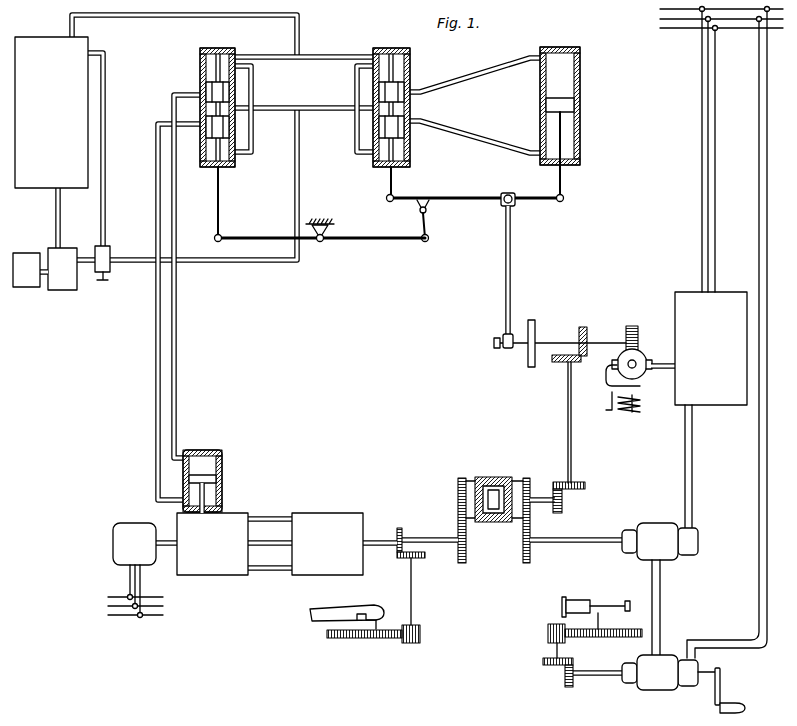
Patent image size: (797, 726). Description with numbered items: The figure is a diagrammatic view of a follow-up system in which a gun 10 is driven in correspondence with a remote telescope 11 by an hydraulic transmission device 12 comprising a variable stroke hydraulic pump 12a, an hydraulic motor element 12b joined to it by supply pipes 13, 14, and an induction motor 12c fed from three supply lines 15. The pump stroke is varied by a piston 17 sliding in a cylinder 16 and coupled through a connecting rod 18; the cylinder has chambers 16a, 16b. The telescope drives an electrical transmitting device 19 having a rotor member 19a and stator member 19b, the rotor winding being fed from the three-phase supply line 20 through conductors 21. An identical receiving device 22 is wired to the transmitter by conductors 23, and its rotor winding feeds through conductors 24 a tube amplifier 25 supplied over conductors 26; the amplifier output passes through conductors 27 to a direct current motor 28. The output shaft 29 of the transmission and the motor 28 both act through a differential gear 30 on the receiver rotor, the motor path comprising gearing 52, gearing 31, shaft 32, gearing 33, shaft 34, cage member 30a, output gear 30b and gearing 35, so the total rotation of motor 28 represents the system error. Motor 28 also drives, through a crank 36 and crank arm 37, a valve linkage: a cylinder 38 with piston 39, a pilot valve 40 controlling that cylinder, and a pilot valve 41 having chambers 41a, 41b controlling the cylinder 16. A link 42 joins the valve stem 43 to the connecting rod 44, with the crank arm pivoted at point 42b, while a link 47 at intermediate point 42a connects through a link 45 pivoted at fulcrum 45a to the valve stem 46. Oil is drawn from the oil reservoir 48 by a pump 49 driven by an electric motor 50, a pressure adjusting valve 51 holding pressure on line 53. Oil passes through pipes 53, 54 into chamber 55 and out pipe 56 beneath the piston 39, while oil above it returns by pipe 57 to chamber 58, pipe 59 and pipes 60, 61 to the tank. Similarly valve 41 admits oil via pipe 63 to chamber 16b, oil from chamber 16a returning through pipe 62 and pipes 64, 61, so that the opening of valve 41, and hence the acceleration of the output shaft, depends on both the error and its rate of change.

The gun 10 is at (318, 608).
The telescope 11 is at (604, 604).
The hydraulic transmission device 12 is at (240, 534).
The variable stroke hydraulic pump 12a is at (206, 572).
The hydraulic motor element 12b is at (349, 572).
The alternating current induction motor 12c is at (113, 545).
The supply pipe 13 is at (273, 516).
The supply pipe 14 is at (266, 571).
The supply lines 15 is at (125, 620).
The cylinder 16 is at (218, 471).
The chamber 16a is at (218, 501).
The chamber 16b is at (205, 452).
The piston 17 is at (217, 479).
The connecting rod 18 is at (208, 494).
The electrical transmitting device 19 is at (659, 671).
The rotor member 19a is at (689, 688).
The stator member 19b is at (668, 655).
The three-phase supply line 20 is at (683, 30).
The conductors 21 is at (758, 111).
The receiving device 22 is at (651, 526).
The conductors 23 is at (664, 602).
The conductors 24 is at (693, 478).
The tube amplifier 25 is at (711, 348).
The conductors 26 is at (705, 203).
The conductors 27 is at (663, 363).
The direct current electric motor 28 is at (640, 379).
The output shaft 29 is at (419, 539).
The differential gear 30 is at (502, 505).
The cage member 30a is at (497, 478).
The output gear 30b is at (513, 488).
The gearing 31 is at (586, 359).
The shaft 32 is at (567, 416).
The gearing 33 is at (562, 506).
The shaft 34 is at (539, 500).
The gearing 35 is at (531, 519).
The crank 36 is at (536, 335).
The crank arm 37 is at (511, 290).
The cylinder 38 is at (575, 106).
The piston 39 is at (568, 105).
The pilot valve 40 is at (405, 102).
The pilot valve 41 is at (231, 106).
The chamber 41a is at (222, 126).
The chamber 41b is at (222, 93).
The link 42 is at (475, 200).
The intermediate point 42a is at (420, 211).
The pivot point 42b is at (512, 207).
The valve stem 43 is at (388, 183).
The connecting rod 44 is at (566, 183).
The link 45 is at (320, 242).
The fulcrum 45a is at (320, 243).
The valve stem 46 is at (220, 212).
The link 47 is at (429, 223).
The oil reservoir 48 is at (36, 40).
The pump 49 is at (63, 249).
The electric motor 50 is at (28, 287).
The pressure adjusting valve 51 is at (108, 274).
The gearing 52 is at (626, 337).
The pipe 53 is at (252, 264).
The pipe 54 is at (324, 107).
The chamber 55 is at (357, 126).
The pipe 56 is at (455, 131).
The pipe 57 is at (490, 68).
The chamber 58 is at (400, 89).
The pipe 59 is at (357, 67).
The pipe 60 is at (320, 56).
The pipe 61 is at (131, 17).
The pipe 62 is at (156, 357).
The pipe 63 is at (176, 334).
The pipe 64 is at (252, 86).